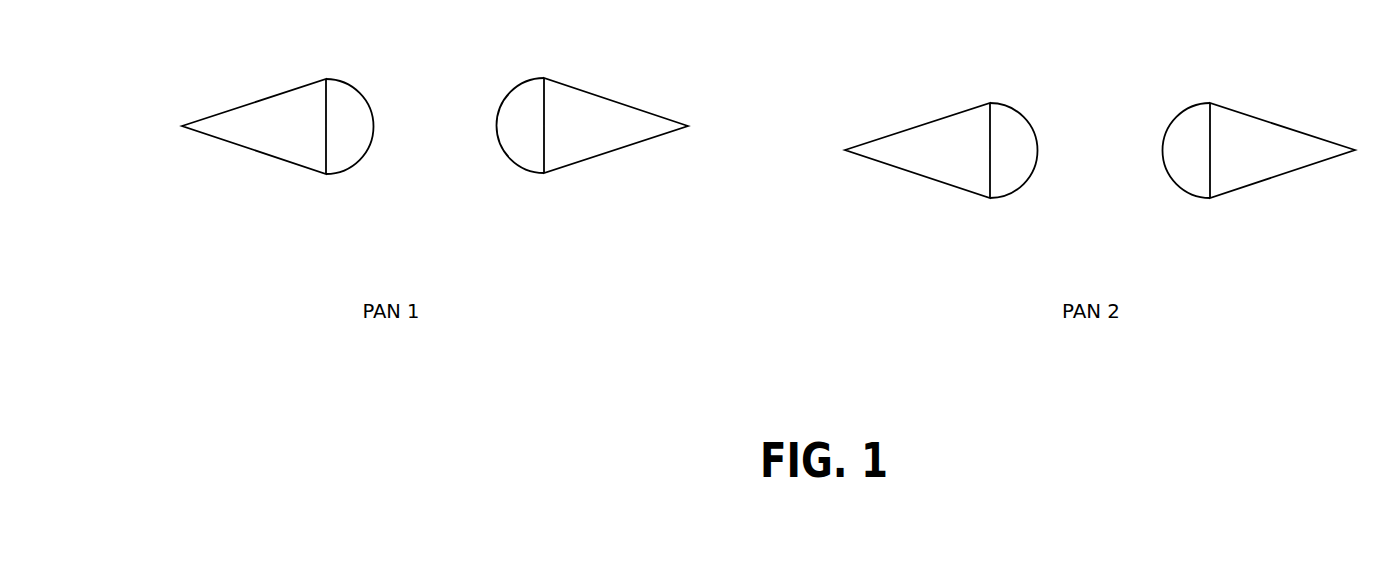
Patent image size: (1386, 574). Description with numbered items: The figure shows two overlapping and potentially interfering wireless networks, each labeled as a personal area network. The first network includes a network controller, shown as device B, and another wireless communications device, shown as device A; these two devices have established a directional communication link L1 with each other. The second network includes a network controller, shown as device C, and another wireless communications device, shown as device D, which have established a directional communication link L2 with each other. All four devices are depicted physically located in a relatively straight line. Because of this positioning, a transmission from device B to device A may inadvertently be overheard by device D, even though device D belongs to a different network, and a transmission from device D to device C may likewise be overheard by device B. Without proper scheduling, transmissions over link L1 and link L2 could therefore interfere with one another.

The wireless communications device STA1 A is at (592, 154).
The network controller NC1 B is at (278, 137).
The network controller NC2 C is at (941, 162).
The wireless communications device STA2 D is at (1259, 162).
The directional communication link L1 is at (318, 72).
The directional communication link L2 is at (1203, 93).